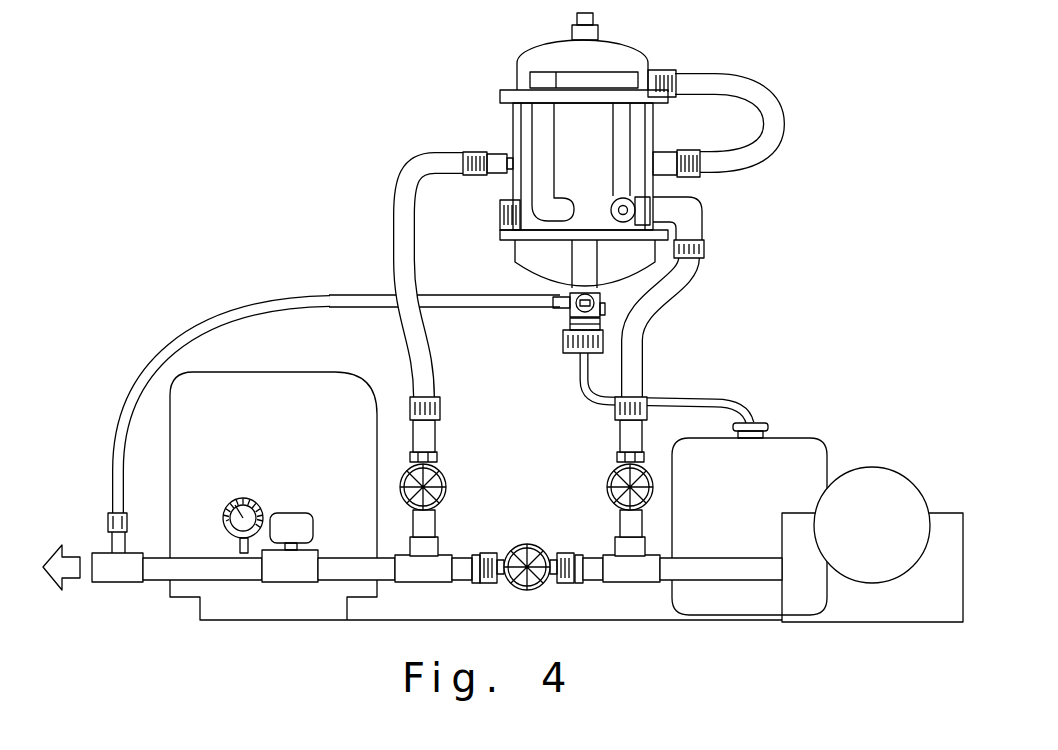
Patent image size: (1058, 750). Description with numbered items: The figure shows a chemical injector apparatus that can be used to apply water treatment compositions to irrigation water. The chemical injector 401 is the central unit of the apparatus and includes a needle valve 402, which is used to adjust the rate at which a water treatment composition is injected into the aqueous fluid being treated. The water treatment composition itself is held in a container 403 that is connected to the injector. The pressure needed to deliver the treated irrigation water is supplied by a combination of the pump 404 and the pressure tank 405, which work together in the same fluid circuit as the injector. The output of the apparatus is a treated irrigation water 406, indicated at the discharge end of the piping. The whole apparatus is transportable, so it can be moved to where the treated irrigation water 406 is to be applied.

The chemical injector 401 is at (632, 43).
The needle valve 402 is at (636, 209).
The container 403 is at (787, 438).
The pump 404 is at (890, 467).
The pressure tank 405 is at (232, 371).
The treated irrigation water 406 is at (80, 580).